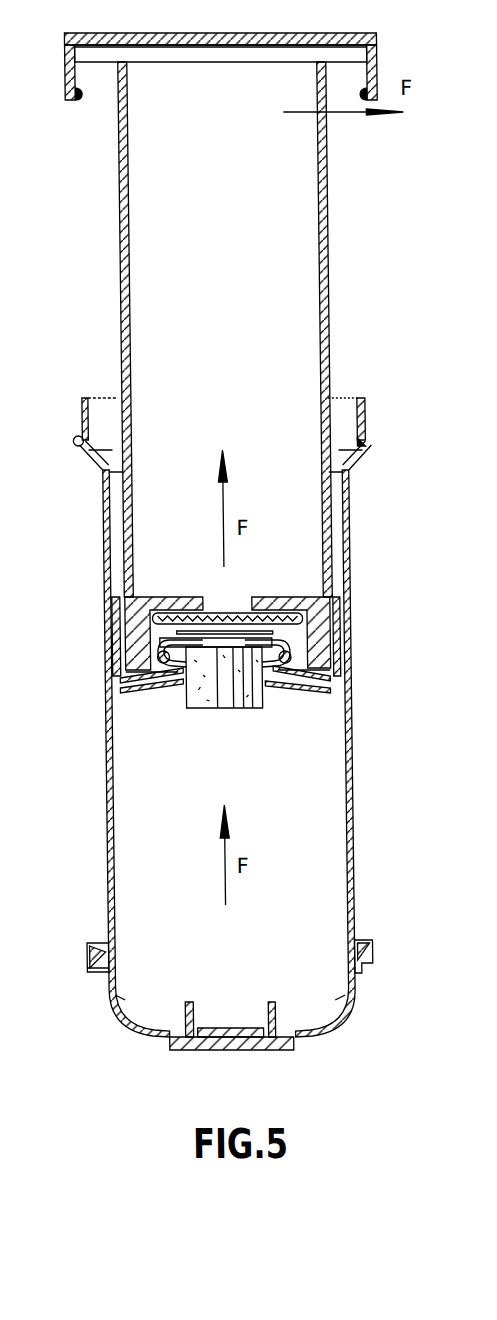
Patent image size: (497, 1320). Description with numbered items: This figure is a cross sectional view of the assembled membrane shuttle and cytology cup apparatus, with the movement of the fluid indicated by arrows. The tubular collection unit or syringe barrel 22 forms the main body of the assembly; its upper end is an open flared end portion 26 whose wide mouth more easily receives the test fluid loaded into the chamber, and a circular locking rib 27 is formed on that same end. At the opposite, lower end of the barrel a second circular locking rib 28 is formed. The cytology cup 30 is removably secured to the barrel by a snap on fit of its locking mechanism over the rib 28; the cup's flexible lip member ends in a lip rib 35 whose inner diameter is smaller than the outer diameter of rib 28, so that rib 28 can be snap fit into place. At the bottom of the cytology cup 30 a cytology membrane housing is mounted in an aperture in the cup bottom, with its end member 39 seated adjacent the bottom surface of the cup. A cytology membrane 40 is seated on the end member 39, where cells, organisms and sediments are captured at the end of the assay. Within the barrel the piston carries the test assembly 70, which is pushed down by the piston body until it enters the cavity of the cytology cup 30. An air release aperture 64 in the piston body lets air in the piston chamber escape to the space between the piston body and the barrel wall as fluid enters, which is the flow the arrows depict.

The syringe barrel 22 is at (342, 880).
The flared end portion 26 is at (360, 410).
The circular locking rib 27 is at (366, 443).
The circular locking rib 28 is at (85, 972).
The cytology cup 30 is at (350, 1009).
The lip rib 35 is at (88, 945).
The end member 39 is at (293, 1050).
The cytology membrane 40 is at (216, 1030).
The air release aperture 64 is at (322, 116).
The test assembly 70 is at (348, 648).